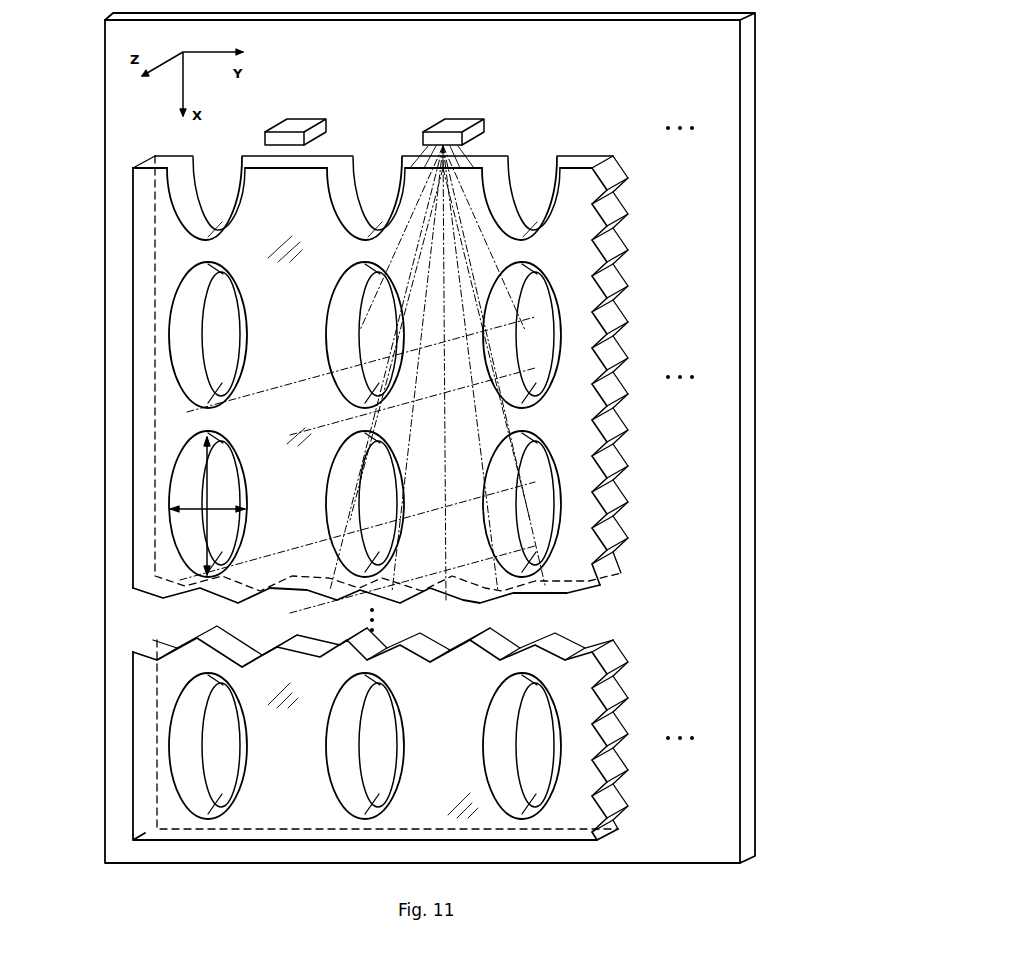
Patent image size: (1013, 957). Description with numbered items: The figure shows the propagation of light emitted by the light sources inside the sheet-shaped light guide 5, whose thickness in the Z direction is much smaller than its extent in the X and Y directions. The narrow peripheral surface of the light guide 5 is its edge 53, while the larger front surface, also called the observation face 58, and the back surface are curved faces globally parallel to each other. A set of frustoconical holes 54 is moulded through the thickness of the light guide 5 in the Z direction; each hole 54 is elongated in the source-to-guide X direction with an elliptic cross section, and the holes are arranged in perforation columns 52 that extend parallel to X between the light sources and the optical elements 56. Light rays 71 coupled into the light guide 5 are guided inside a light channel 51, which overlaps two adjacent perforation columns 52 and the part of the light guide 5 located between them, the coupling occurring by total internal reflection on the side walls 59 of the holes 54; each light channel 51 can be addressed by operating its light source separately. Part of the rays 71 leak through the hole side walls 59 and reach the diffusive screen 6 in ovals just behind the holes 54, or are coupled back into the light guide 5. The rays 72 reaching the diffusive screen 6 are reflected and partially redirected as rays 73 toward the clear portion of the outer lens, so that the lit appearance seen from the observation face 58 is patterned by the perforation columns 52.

The light guide 5 is at (657, 420).
The diffusive screen 6 is at (747, 187).
The light channel 51 is at (421, 95).
The perforation column 52 is at (318, 103).
The edge 53 is at (582, 165).
The frustoconical hole 54 is at (182, 547).
The optical element 56 is at (450, 120).
The front surface 58 is at (305, 362).
The side wall 59 is at (548, 372).
The light ray 71 is at (490, 268).
The ray reaching the diffusive screen 72 is at (383, 312).
The redirected ray 73 is at (283, 362).